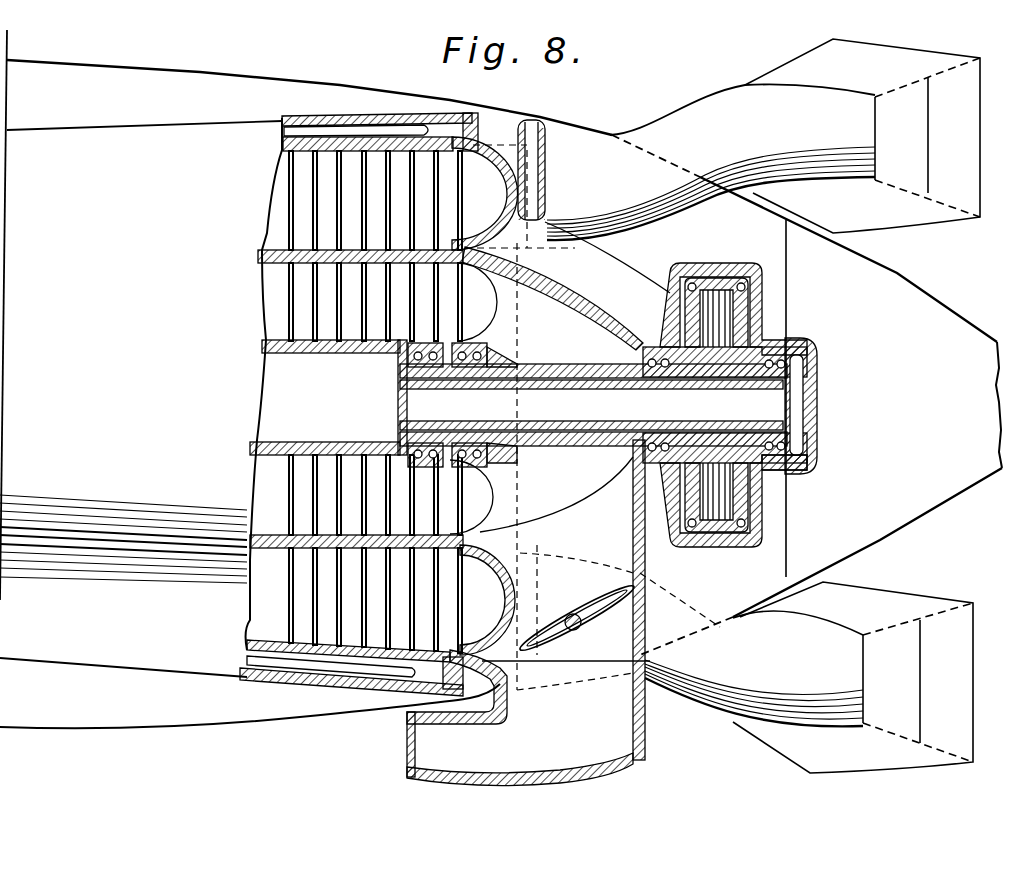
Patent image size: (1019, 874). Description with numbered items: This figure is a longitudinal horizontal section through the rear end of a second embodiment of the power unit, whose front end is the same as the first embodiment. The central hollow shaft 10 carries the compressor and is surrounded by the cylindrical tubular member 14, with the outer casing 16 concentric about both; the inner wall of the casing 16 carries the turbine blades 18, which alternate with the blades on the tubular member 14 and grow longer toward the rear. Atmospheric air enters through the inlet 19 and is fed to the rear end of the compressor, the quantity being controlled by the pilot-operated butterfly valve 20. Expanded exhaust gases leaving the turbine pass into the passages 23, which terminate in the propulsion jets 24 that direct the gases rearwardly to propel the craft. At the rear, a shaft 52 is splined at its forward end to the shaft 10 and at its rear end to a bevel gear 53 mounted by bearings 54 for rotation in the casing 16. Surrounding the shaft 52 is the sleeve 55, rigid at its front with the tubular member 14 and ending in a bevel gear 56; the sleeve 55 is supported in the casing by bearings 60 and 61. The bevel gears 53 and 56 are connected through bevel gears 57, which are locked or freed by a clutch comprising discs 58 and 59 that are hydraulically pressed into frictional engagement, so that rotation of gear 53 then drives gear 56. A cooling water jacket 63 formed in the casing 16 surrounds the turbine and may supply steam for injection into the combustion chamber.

The hollow shaft 10 is at (326, 355).
The cylindrical tubular member 14 is at (262, 255).
The casing 16 is at (282, 150).
The turbine blades 18 is at (295, 188).
The inlet 19 is at (463, 767).
The butterfly valve 20 is at (582, 610).
The passages 23 is at (643, 127).
The propulsion jets 24 is at (965, 193).
The shaft 52 is at (551, 366).
The bevel gear 53 is at (790, 371).
The bearings 54 is at (790, 439).
The sleeve 55 is at (598, 437).
The bevel gear 56 is at (690, 382).
The bevel gears 57 is at (745, 358).
The disc 58 is at (705, 278).
The disc 59 is at (730, 278).
The bearing 60 is at (480, 343).
The bearing 61 is at (637, 458).
The cooling water jacket 63 is at (338, 132).